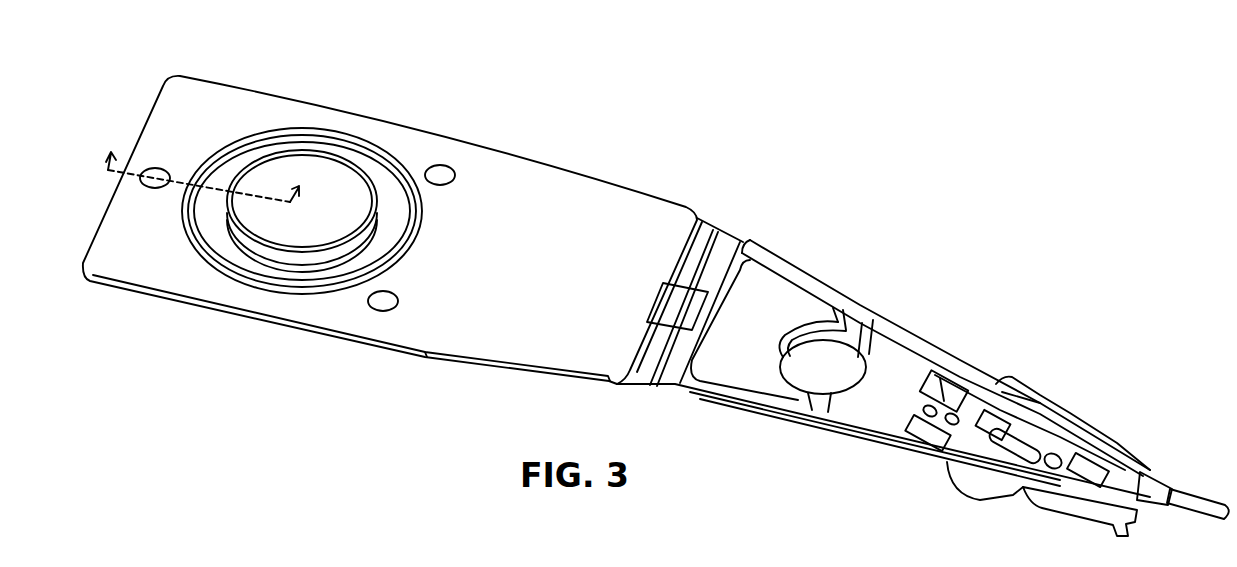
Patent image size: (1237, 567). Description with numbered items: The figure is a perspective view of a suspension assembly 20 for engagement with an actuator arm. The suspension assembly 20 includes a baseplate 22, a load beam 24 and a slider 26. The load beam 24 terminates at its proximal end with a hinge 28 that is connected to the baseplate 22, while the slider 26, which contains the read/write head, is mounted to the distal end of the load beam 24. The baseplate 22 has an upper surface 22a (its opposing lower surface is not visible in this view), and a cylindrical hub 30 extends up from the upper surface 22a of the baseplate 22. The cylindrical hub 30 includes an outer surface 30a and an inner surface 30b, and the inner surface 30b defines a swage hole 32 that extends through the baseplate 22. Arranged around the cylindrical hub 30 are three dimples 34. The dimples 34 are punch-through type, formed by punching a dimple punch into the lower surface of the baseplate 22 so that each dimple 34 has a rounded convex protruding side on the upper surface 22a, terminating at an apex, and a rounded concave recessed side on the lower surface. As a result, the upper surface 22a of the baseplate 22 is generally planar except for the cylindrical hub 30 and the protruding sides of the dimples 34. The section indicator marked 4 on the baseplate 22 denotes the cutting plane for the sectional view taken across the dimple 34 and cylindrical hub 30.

The suspension assembly 20 is at (908, 143).
The baseplate 22 is at (547, 170).
The upper surface 22a is at (547, 283).
The load beam 24 is at (909, 336).
The slider 26 is at (1093, 430).
The hinge 28 is at (727, 235).
The cylindrical hub 30 is at (334, 146).
The outer surface 30a is at (242, 265).
The inner surface 30b is at (356, 168).
The swage hole 32 is at (280, 179).
The dimples 34 is at (158, 170).
The section line 4- 4 is at (208, 164).